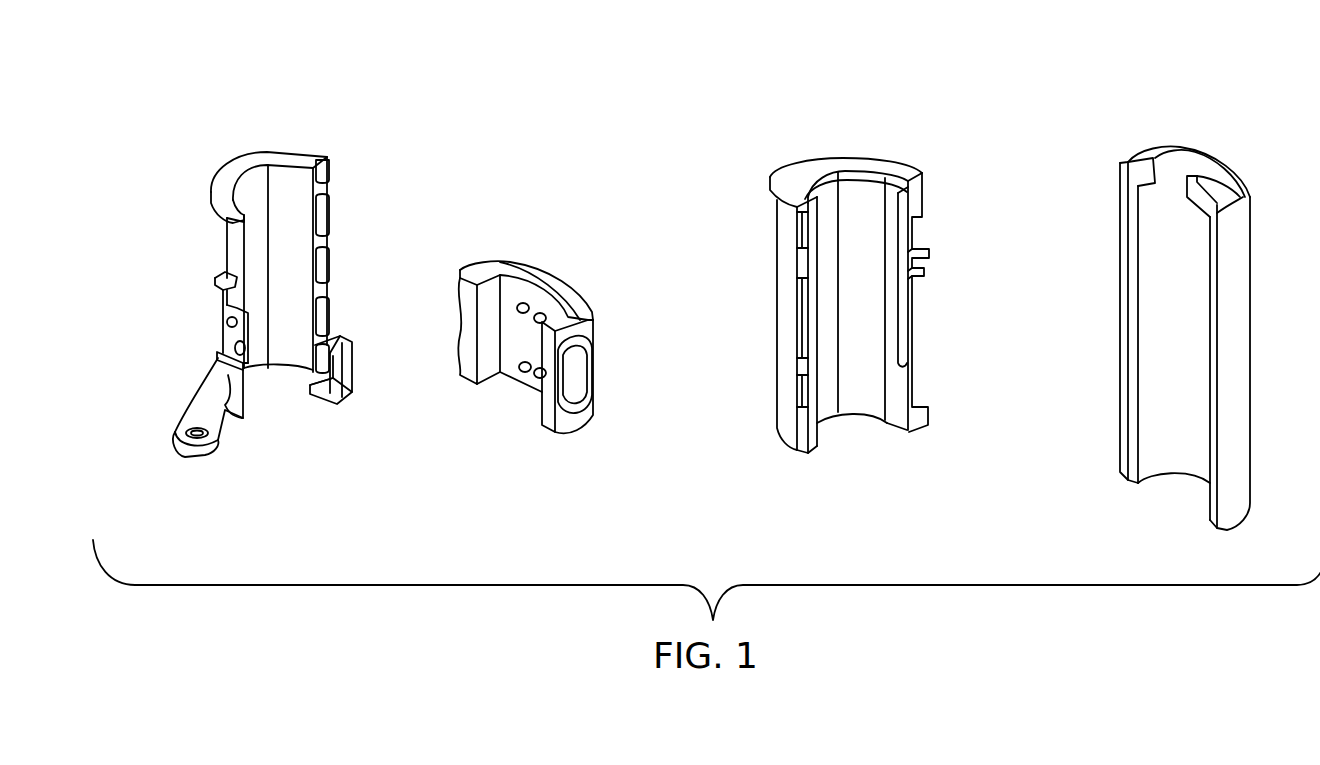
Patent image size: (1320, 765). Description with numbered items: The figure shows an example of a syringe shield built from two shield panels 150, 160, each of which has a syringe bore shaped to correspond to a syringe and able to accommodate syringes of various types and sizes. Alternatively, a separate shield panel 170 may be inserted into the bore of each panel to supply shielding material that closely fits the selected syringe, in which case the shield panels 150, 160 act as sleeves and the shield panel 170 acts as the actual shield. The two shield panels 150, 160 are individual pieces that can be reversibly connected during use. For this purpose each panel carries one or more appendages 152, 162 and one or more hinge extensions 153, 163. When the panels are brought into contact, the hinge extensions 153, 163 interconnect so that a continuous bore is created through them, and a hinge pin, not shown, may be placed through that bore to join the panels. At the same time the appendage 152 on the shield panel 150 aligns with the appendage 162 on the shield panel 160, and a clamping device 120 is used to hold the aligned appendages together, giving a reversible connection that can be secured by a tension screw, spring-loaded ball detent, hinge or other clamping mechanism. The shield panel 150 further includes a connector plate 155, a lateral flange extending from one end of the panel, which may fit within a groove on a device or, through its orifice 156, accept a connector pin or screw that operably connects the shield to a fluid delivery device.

The clamping device 120 is at (503, 422).
The shield panel 150 is at (243, 130).
The appendage 152 is at (211, 301).
The hinge extension 153 is at (337, 273).
The connector plate 155 is at (212, 406).
The orifice 156 is at (192, 440).
The shield panel 160 is at (865, 143).
The appendage 162 is at (933, 234).
The hinge extension 163 is at (794, 289).
The shield panel 170 is at (1155, 124).